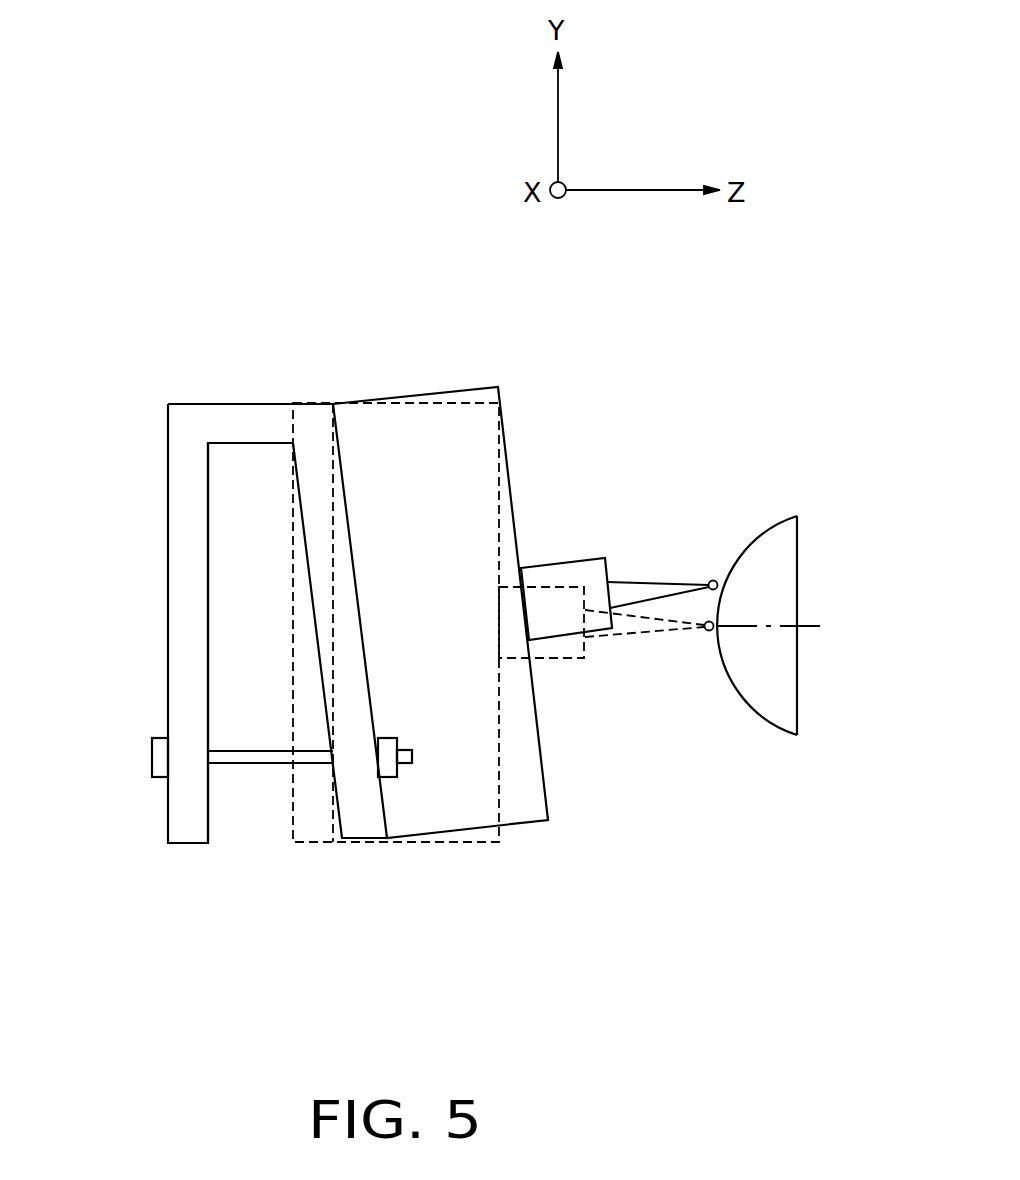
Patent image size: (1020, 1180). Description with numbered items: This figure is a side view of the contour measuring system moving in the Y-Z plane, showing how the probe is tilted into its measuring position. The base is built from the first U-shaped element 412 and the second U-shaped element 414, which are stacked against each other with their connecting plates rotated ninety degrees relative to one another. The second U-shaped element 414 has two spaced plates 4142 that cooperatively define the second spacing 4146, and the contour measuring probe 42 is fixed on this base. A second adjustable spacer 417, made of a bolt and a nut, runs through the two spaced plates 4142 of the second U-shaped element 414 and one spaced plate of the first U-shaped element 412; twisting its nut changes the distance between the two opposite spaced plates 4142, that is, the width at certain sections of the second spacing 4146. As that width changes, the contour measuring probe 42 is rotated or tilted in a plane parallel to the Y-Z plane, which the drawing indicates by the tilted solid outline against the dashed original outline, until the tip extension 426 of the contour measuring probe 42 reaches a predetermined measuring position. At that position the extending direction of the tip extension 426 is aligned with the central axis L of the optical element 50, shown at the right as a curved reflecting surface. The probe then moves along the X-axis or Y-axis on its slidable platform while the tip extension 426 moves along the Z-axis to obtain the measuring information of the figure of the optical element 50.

The second U-shaped element 414 is at (237, 360).
The first U-shaped element 412 is at (425, 360).
The spaced plate 4142 is at (360, 810).
The second spacing 4146 is at (243, 828).
The second adjustable spacer 417 is at (250, 758).
The contour measuring probe 42 is at (567, 563).
The tip extension 426 is at (660, 587).
The optical element 50 is at (765, 685).
The central axis L is at (811, 624).